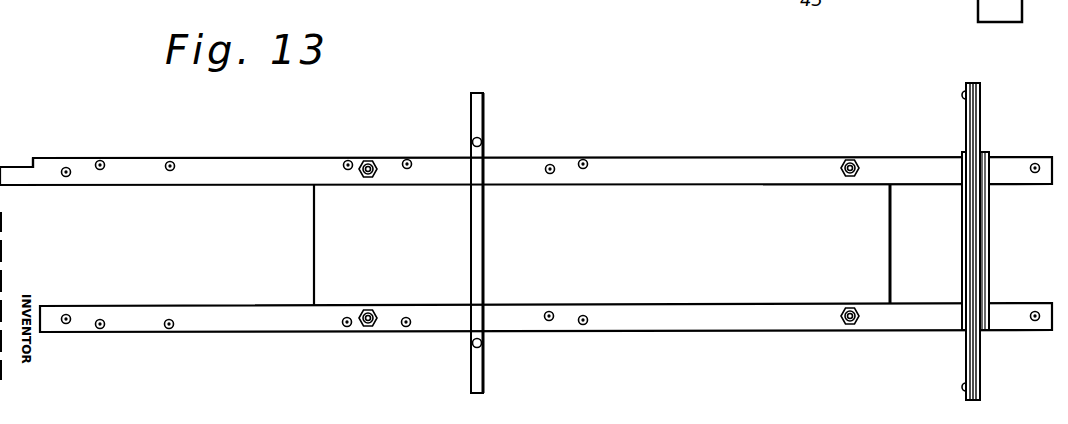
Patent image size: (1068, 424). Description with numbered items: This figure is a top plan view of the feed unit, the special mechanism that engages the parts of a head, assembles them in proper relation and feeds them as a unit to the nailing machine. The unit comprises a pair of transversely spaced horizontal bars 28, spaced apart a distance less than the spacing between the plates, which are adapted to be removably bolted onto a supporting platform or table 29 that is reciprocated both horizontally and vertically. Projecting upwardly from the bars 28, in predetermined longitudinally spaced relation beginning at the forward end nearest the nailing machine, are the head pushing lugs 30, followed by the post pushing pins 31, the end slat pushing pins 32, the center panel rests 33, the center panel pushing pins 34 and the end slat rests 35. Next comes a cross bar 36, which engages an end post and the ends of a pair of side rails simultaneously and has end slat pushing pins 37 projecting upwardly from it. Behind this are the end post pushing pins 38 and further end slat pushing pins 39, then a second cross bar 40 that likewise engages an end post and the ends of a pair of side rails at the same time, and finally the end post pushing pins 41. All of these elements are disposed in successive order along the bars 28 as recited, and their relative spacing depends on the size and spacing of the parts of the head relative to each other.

The horizontal bars 28 is at (683, 167).
The supporting platform or table 29 is at (672, 279).
The head pushing lugs 30 is at (0, 133).
The post pushing pins 31 is at (66, 177).
The end slat pushing pins 32 is at (100, 170).
The center panel rests 33 is at (170, 171).
The center panel pushing pins 34 is at (347, 170).
The end slat rests 35 is at (402, 316).
The cross bar 36 is at (473, 220).
The end slat pushing pins 37 is at (480, 140).
The end post pushing pins 38 is at (551, 174).
The end slat pushing pins 39 is at (584, 169).
The cross bar 40 is at (968, 230).
The end post pushing pins 41 is at (1033, 173).